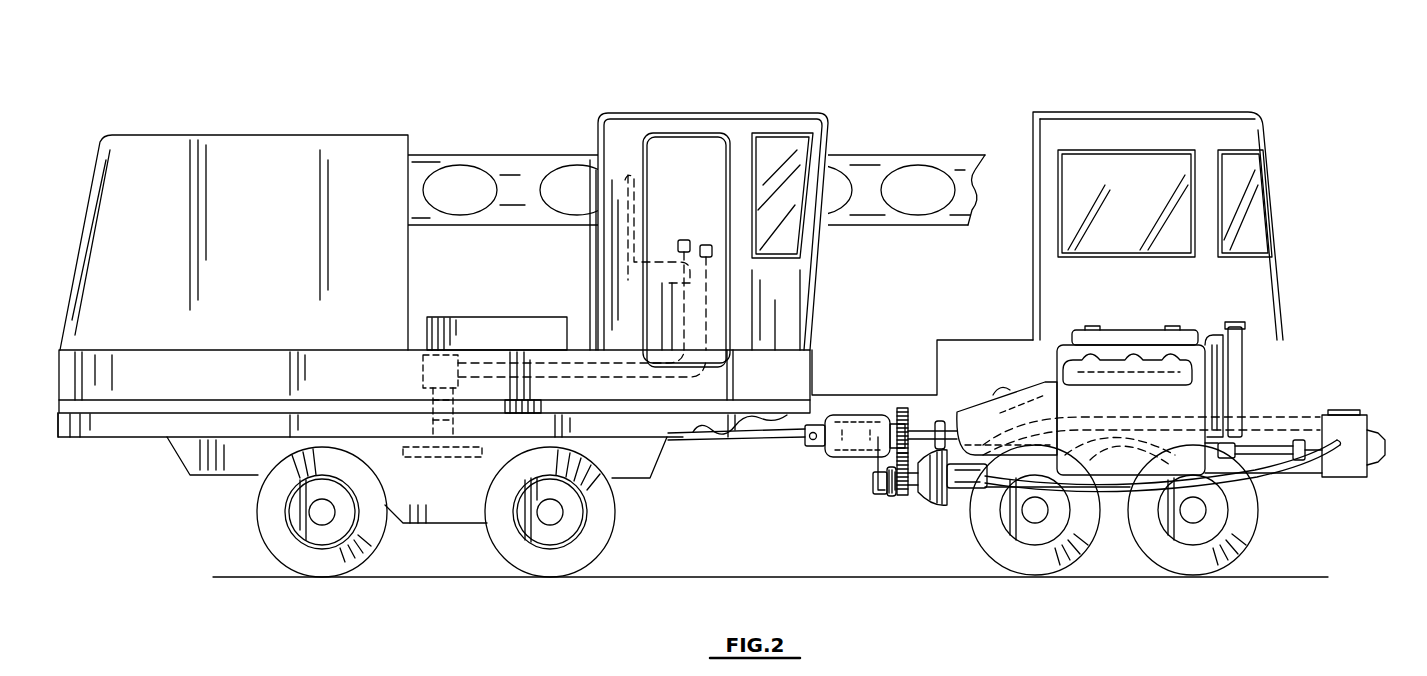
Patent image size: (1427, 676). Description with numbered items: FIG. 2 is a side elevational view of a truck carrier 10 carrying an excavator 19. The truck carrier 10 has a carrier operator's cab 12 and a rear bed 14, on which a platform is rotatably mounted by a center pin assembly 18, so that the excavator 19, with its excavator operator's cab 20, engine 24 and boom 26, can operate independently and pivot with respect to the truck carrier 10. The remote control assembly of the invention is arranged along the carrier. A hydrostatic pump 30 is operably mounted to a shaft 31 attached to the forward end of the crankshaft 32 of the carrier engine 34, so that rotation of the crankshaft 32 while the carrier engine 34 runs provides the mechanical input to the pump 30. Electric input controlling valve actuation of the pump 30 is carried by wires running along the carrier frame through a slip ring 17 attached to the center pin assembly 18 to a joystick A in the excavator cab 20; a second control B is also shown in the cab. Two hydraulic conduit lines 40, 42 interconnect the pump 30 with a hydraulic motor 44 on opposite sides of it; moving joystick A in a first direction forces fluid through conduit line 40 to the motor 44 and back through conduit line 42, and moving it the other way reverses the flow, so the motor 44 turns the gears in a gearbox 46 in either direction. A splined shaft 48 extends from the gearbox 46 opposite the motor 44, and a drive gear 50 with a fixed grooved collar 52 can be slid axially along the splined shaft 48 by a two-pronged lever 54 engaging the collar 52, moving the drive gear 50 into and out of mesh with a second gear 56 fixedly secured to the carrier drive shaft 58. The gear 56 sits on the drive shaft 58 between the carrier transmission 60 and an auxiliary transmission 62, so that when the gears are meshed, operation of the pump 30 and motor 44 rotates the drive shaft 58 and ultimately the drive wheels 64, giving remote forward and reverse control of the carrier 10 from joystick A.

The truck carrier 10 is at (1330, 208).
The carrier operator's cab 12 is at (1135, 112).
The rear bed 14 is at (146, 434).
The slip ring 17 is at (423, 372).
The center pin assembly 18 is at (456, 424).
The excavator 19 is at (760, 48).
The excavator operator's cab 20 is at (641, 112).
The engine 24 is at (262, 135).
The boom 26 is at (455, 158).
The hydrostatic pump 30 is at (1367, 432).
The shaft 31 is at (1268, 452).
The crankshaft 32 is at (1227, 465).
The carrier engine 34 is at (1144, 416).
The hydraulic conduit line 40 is at (1258, 488).
The hydraulic conduit line 42 is at (1305, 415).
The hydraulic motor 44 is at (972, 492).
The gearbox 46 is at (920, 500).
The splined shaft 48 is at (873, 482).
The drive gear 50 is at (903, 497).
The grooved collar 52 is at (892, 497).
The two-pronged lever 54 is at (872, 472).
The second gear 56 is at (904, 408).
The drive shaft 58 is at (708, 440).
The carrier transmission 60 is at (966, 410).
The auxiliary transmission 62 is at (852, 418).
The drive wheels 64 is at (385, 540).
The joystick A is at (680, 238).
The control lever B is at (706, 243).